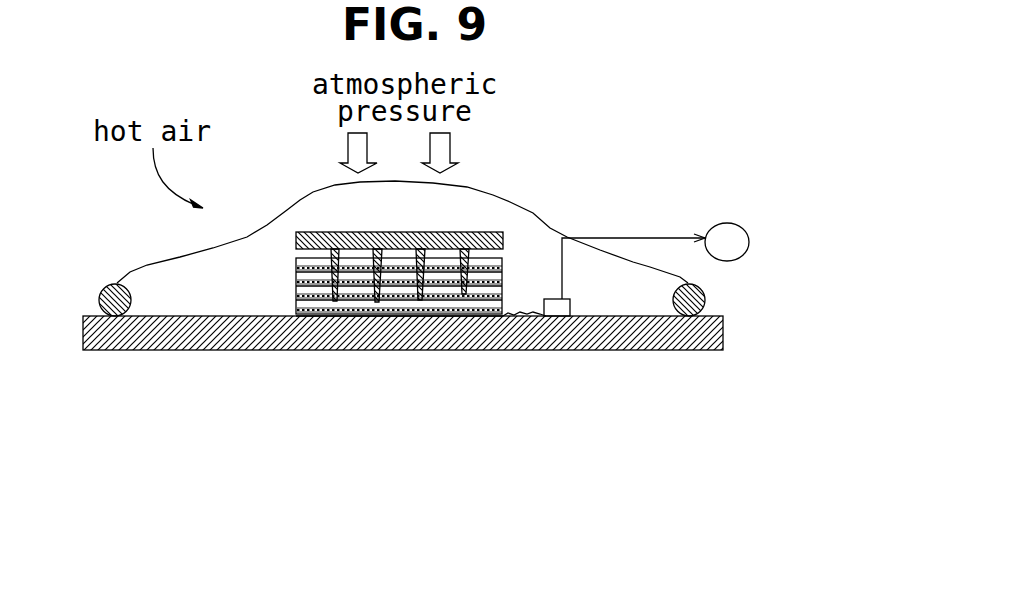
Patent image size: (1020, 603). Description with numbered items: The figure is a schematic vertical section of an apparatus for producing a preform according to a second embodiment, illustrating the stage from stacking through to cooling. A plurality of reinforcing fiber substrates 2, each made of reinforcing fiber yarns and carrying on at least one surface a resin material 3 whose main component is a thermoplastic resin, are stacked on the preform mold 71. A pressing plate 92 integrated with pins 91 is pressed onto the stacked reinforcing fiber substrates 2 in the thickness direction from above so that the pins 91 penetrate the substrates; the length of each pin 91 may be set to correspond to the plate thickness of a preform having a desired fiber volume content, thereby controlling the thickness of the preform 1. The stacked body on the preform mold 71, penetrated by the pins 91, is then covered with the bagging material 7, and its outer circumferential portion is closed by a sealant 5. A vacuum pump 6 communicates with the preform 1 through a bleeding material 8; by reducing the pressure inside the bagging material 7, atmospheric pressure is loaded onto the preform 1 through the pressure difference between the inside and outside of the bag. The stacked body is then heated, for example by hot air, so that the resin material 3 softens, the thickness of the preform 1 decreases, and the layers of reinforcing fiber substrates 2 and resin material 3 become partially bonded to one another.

The preform 1 is at (352, 320).
The reinforcing fiber substrates 2 is at (491, 270).
The resin material 3 is at (475, 268).
The sealant 5 is at (705, 293).
The vacuum pump 6 is at (730, 222).
The bagging material 7 is at (539, 223).
The preform mold 71 is at (512, 320).
The bleeding material 8 is at (530, 314).
The pins 91 is at (330, 272).
The pressing plate 92 is at (427, 238).